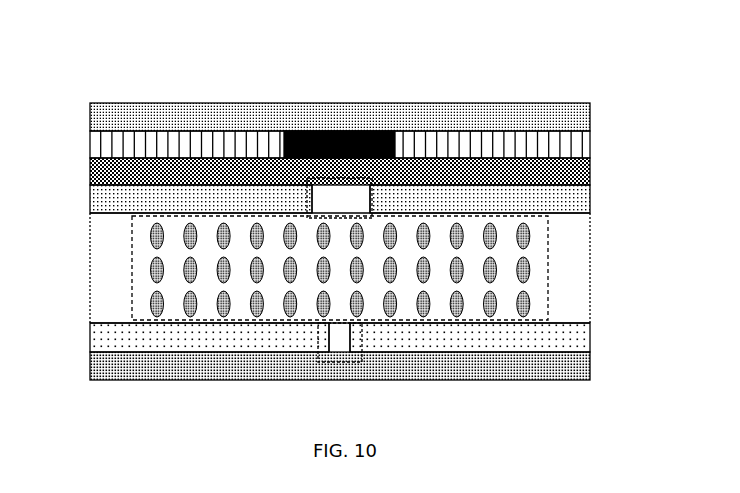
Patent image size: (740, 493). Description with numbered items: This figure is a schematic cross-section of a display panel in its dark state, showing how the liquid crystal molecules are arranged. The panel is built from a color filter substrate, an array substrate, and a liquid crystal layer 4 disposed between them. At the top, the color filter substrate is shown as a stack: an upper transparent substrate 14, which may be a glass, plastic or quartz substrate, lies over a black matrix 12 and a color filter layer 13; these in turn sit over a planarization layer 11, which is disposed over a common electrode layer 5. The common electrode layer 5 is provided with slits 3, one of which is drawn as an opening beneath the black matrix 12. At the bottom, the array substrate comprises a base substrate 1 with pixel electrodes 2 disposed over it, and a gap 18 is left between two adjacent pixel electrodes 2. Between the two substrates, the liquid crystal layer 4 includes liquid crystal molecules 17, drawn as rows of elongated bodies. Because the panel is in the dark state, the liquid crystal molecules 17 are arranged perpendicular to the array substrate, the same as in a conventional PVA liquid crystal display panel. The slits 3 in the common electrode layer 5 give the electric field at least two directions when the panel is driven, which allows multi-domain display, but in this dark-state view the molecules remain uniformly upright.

The base substrate 1 is at (590, 366).
The pixel electrodes 2 is at (590, 338).
The slits 3 is at (340, 192).
The liquid crystal layer 4 is at (590, 270).
The common electrode layer 5 is at (590, 198).
The planarization layer 11 is at (590, 171).
The black matrix 12 is at (340, 131).
The color filter layer 13 is at (590, 143).
The upper transparent substrate 14 is at (590, 115).
The liquid crystal molecules 17 is at (548, 230).
The gap 18 is at (340, 340).